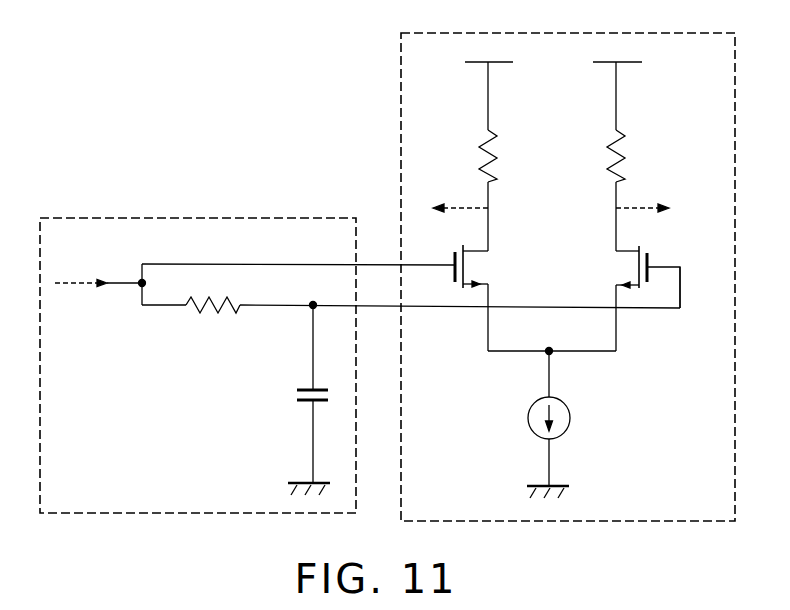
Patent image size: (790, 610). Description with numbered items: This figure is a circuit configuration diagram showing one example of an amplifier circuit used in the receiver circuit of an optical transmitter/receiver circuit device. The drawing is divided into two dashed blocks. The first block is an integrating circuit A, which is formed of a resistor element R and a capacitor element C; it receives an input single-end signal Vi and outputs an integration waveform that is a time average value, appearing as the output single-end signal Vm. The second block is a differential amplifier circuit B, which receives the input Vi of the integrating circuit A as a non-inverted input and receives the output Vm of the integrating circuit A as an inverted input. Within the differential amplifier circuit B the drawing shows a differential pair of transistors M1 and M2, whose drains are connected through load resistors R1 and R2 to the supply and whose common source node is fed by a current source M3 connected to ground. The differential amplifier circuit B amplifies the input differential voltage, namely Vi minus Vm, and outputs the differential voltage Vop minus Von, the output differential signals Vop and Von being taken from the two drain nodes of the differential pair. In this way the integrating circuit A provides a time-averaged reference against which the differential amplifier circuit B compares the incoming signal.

The integrating circuit A is at (198, 352).
The differential amplifier circuit B is at (568, 263).
The input single-end signal Vi is at (98, 272).
The resistor element R is at (191, 291).
The capacitor element C is at (303, 394).
The load resistor 1 R1 is at (481, 156).
The load resistor 2 R2 is at (624, 156).
The output differential signal Von is at (460, 193).
The output differential signal Vop is at (642, 194).
The transistor M1 is at (455, 260).
The transistor M2 is at (643, 262).
The output single-end signal Vm is at (700, 287).
The current source transistor M3 is at (533, 418).